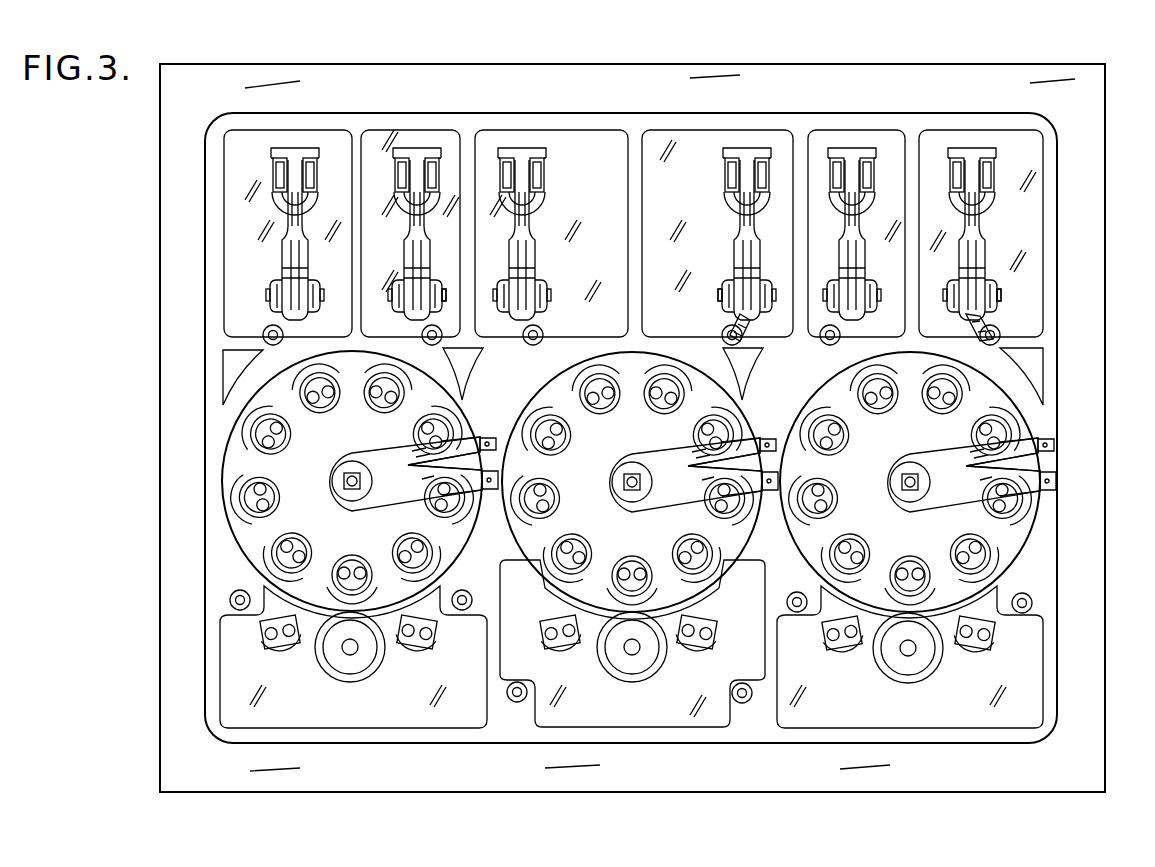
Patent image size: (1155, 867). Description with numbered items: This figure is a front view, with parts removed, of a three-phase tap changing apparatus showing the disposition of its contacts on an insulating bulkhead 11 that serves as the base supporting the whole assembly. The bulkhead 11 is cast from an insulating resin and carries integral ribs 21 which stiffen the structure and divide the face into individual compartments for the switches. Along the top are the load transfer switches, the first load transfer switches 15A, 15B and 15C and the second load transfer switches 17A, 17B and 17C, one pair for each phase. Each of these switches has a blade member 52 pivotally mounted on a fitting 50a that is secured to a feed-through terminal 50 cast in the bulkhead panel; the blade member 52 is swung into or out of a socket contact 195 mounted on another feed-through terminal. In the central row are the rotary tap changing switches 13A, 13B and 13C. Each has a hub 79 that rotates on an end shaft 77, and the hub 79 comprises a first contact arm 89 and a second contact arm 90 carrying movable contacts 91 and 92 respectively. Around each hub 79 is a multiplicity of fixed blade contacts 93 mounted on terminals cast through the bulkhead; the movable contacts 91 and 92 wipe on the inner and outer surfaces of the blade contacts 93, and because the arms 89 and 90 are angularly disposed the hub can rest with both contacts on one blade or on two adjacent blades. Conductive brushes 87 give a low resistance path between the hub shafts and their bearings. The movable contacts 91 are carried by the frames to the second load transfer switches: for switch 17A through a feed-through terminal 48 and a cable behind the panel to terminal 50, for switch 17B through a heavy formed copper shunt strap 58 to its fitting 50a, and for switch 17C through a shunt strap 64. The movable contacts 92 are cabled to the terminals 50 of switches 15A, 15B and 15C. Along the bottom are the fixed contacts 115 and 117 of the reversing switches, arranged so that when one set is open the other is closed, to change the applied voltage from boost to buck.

The insulating bulkhead 11 is at (1074, 280).
The integral ribs 21 is at (630, 244).
The first load transfer switch 15A is at (276, 214).
The first load transfer switch 15B is at (550, 161).
The first load transfer switch 15C is at (412, 142).
The second load transfer switch 17A is at (850, 142).
The second load transfer switch 17B is at (745, 142).
The second load transfer switch 17C is at (986, 142).
The socket contact 195 is at (320, 178).
The blade member 52 is at (404, 253).
The feed-through terminal 50 is at (270, 306).
The fitting 50a is at (493, 289).
The copper shunt strap 58 is at (750, 330).
The shunt strap 64 is at (990, 314).
The rotary tap changing switch 13A is at (275, 529).
The rotary tap changing switch 13B is at (624, 441).
The rotary tap changing switch 13C is at (986, 396).
The fixed blade contacts 93 is at (252, 496).
The hub 79 is at (385, 453).
The first contact arm 89 is at (470, 439).
The second contact arm 90 is at (481, 493).
The movable contact 91 is at (494, 445).
The movable contact 92 is at (480, 476).
The conductive brushes 87 is at (352, 463).
The end shaft 77 is at (350, 491).
The feed-through terminal 48 is at (466, 596).
The fixed contact 115 is at (263, 642).
The fixed contact 117 is at (405, 654).